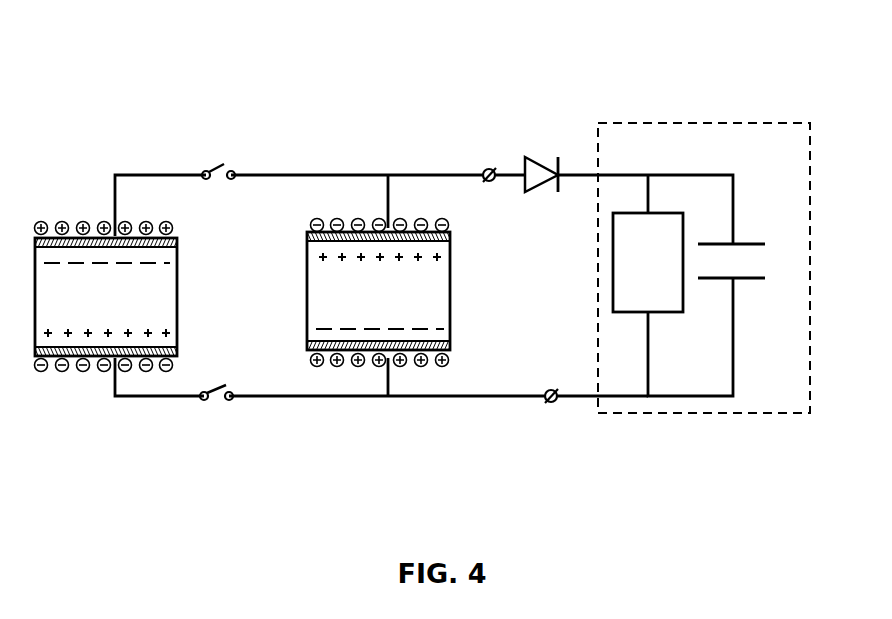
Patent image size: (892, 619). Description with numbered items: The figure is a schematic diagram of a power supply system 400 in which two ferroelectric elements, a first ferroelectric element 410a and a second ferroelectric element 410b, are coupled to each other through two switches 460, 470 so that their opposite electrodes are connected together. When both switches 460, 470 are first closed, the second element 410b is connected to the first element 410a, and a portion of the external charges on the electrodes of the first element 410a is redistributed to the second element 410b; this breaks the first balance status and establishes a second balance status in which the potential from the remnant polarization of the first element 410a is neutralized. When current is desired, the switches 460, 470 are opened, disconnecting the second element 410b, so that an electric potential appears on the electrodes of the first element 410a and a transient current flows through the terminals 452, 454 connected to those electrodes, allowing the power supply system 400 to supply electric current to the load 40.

The power supply system 400 is at (200, 114).
The first ferroelectric element 410a is at (378, 293).
The second ferroelectric element 410b is at (106, 297).
The switch 460 is at (224, 165).
The switch 470 is at (213, 400).
The terminal 454 is at (494, 167).
The terminal 452 is at (550, 404).
The load 40 is at (758, 413).